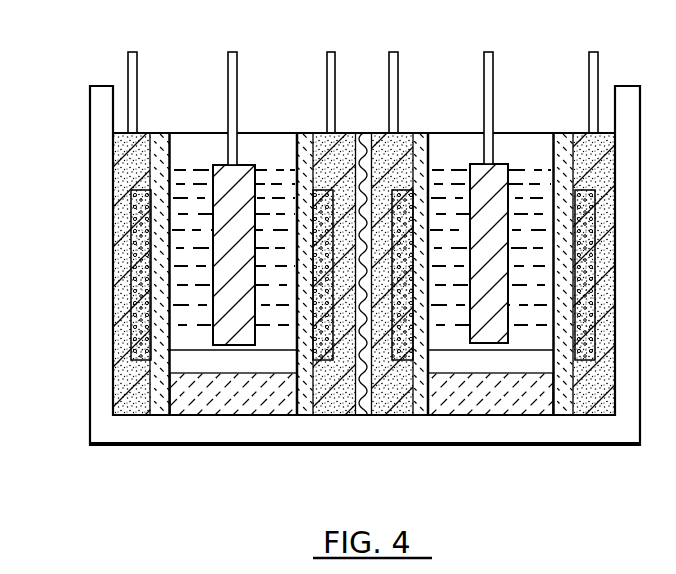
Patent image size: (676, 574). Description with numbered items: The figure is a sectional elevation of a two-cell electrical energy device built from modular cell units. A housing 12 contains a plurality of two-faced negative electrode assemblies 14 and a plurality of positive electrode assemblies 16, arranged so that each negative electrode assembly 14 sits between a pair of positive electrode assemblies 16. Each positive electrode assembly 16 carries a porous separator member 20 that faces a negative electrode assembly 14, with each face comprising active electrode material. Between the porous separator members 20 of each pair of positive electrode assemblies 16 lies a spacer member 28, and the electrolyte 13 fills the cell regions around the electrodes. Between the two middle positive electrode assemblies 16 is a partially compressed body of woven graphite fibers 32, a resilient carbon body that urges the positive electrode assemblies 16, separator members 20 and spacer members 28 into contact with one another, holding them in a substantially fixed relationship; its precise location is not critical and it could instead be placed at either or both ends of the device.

The housing 12 is at (90, 98).
The electrolyte 13 is at (283, 165).
The two-faced negative electrode assembly 14 is at (244, 126).
The positive electrode assembly 16 is at (143, 126).
The porous separator member 20 is at (161, 405).
The spacer member 28 is at (188, 132).
The partially compressed body of woven graphite fibers 32 is at (363, 410).